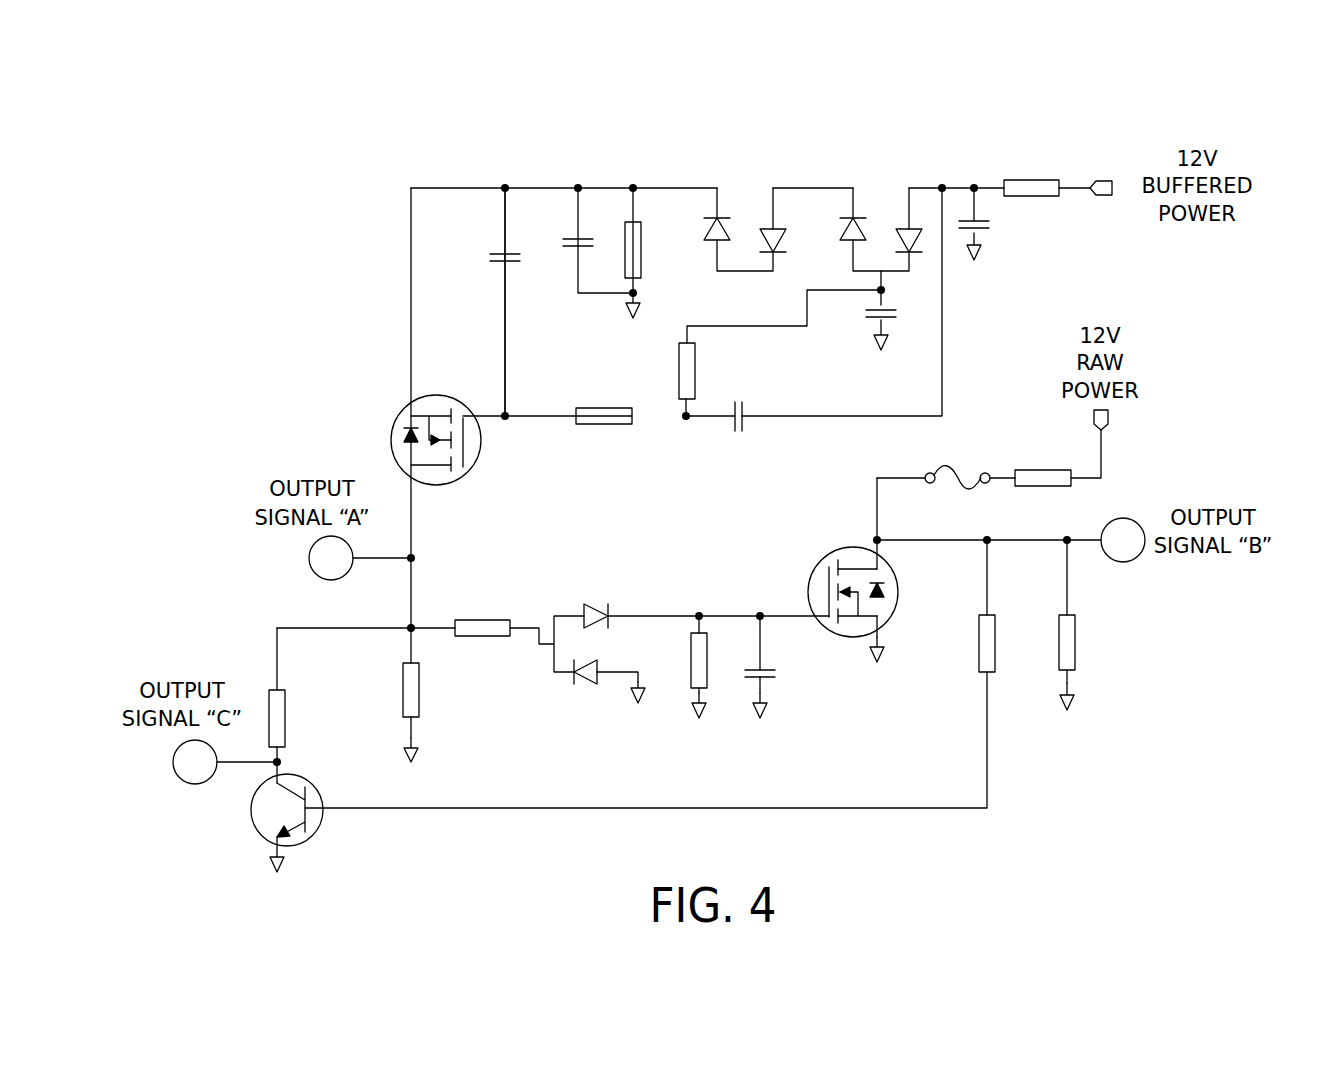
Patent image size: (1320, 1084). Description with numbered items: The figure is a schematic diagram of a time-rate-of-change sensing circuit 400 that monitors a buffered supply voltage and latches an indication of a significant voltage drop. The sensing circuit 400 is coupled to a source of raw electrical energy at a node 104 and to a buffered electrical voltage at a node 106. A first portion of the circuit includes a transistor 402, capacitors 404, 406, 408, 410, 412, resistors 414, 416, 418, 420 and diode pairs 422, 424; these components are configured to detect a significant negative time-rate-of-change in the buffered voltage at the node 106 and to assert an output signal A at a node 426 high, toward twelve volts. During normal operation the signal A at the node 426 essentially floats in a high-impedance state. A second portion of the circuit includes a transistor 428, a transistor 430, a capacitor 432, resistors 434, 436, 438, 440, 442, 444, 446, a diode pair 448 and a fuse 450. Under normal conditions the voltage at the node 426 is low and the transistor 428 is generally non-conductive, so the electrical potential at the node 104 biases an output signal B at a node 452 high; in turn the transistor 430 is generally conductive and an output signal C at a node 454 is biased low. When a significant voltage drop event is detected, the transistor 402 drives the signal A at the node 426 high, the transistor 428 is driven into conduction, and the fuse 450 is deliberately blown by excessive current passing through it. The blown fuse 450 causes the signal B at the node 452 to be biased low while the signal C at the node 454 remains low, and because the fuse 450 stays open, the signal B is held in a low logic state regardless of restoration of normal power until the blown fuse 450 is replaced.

The time-rate-of-change sensing circuit 400 is at (443, 126).
The transistor 402 is at (460, 482).
The capacitor 404 is at (500, 254).
The capacitor 406 is at (573, 239).
The capacitor 408 is at (745, 428).
The capacitor 410 is at (876, 320).
The capacitor 412 is at (982, 232).
The resistor 414 is at (616, 408).
The resistor 416 is at (641, 252).
The resistor 418 is at (696, 353).
The resistor 420 is at (1032, 180).
The diode pair 422 is at (752, 183).
The diode pair 424 is at (883, 178).
The node 426 is at (310, 548).
The transistor 428 is at (818, 558).
The transistor 430 is at (316, 836).
The capacitor 432 is at (768, 680).
The resistor 434 is at (286, 712).
The resistor 436 is at (403, 706).
The resistor 438 is at (503, 637).
The resistor 440 is at (690, 672).
The resistor 442 is at (978, 625).
The resistor 444 is at (1058, 625).
The resistor 446 is at (1058, 470).
The diode pair 448 is at (590, 588).
The fuse 450 is at (942, 470).
The node 452 is at (1127, 562).
The node 454 is at (192, 785).
The node 104 is at (1110, 412).
The node 106 is at (1108, 180).